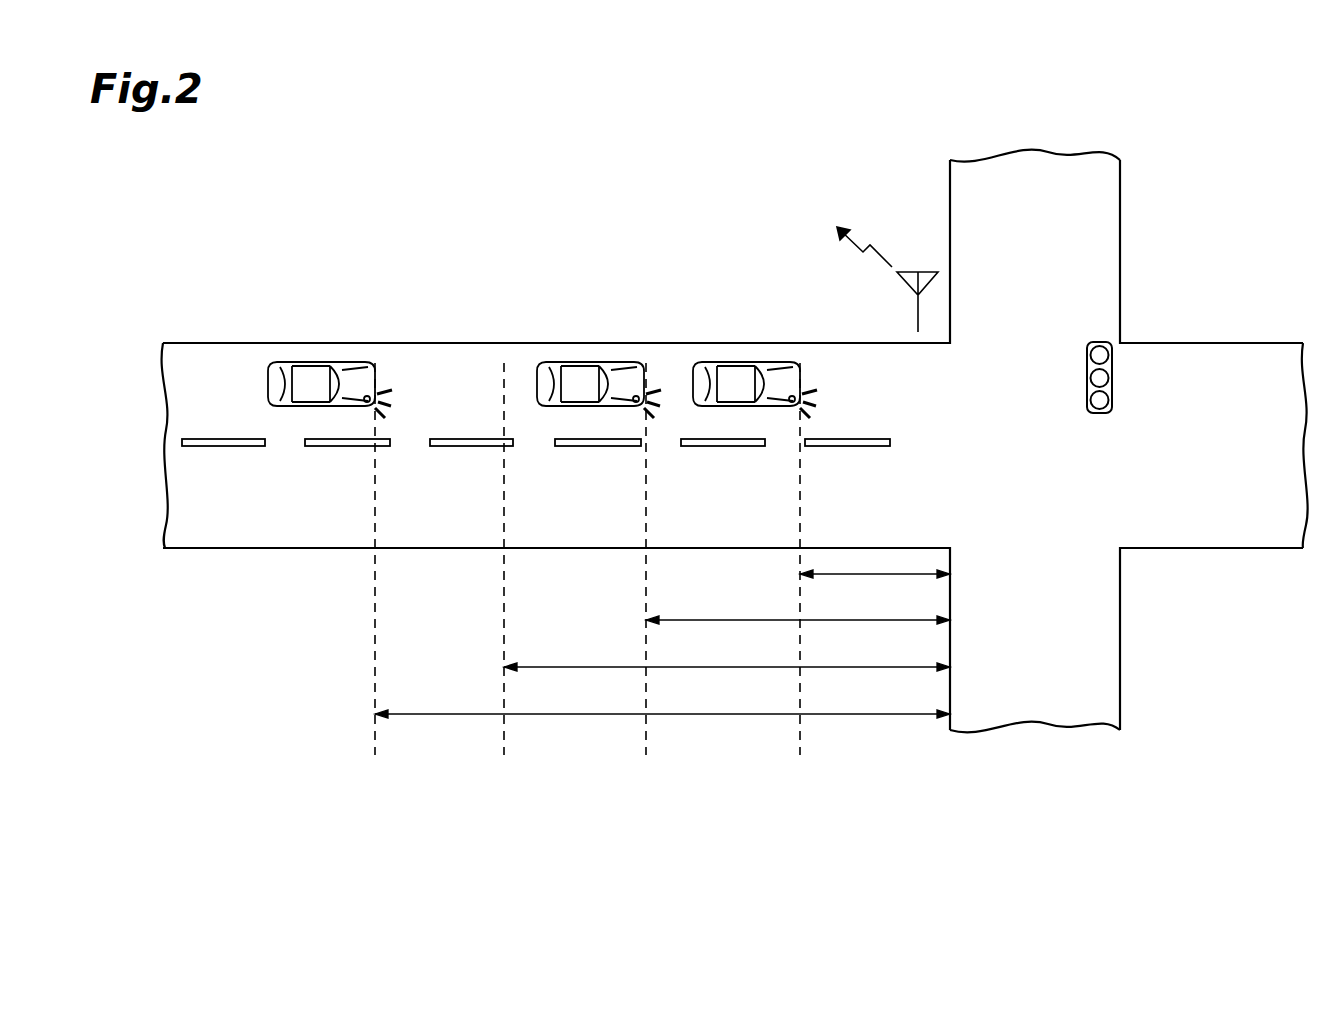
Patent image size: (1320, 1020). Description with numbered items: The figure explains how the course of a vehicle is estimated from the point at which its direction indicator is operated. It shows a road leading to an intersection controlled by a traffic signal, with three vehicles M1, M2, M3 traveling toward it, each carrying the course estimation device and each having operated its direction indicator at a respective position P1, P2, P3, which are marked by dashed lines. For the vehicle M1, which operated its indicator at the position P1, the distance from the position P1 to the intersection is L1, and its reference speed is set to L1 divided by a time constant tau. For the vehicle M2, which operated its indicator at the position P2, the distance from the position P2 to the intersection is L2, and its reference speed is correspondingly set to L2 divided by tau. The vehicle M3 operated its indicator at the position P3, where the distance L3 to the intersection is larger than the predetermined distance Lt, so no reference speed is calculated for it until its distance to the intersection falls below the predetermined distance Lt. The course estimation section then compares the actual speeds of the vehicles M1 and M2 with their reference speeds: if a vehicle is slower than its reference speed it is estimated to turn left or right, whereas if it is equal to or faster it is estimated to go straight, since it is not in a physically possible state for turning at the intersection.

The vehicle M1 is at (753, 362).
The vehicle M2 is at (600, 362).
The vehicle M3 is at (328, 362).
The position P1 is at (800, 576).
The position P2 is at (645, 576).
The position P3 is at (375, 576).
The distance L1 is at (875, 588).
The distance L2 is at (798, 634).
The distance L3 is at (662, 727).
The predetermined distance Lt is at (727, 680).